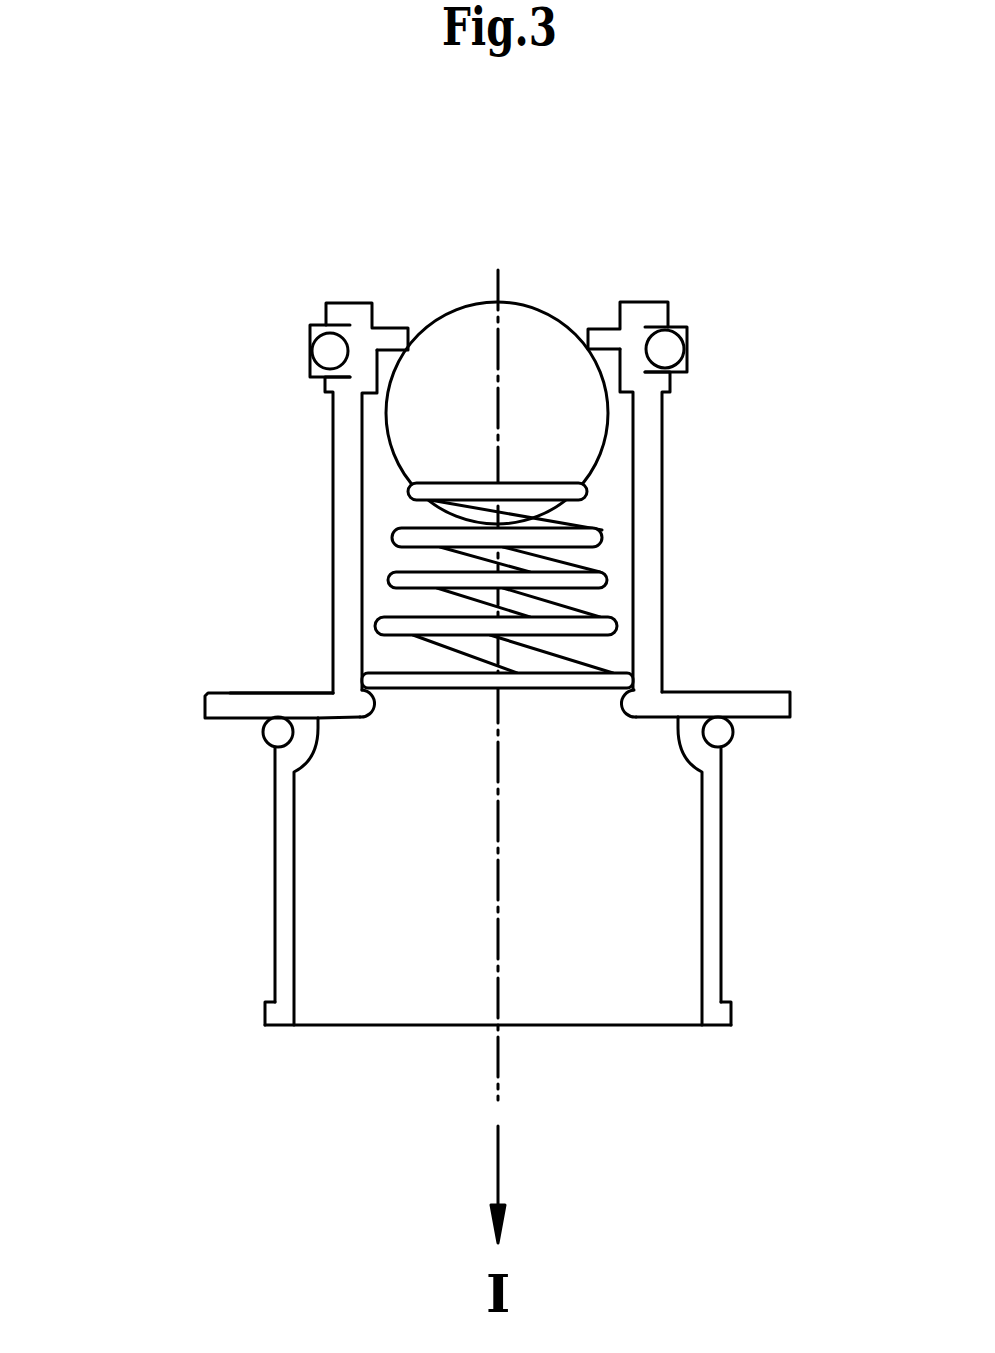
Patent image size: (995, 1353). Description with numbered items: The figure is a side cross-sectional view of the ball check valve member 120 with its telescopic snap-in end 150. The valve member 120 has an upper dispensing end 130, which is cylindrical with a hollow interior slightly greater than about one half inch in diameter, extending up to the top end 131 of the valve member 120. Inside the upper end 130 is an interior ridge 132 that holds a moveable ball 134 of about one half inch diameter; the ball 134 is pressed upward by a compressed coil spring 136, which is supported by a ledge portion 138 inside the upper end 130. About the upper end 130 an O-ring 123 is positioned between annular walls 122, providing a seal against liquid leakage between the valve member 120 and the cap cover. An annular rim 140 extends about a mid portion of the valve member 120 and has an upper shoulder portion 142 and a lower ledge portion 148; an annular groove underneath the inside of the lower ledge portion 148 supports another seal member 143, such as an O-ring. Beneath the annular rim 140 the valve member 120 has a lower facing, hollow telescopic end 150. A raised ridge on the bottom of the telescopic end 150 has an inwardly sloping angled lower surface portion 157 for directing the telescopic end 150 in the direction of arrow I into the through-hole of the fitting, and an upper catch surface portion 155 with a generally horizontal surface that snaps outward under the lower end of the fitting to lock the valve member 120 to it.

The ball check valve member 120 is at (121, 568).
The annular walls 122 is at (316, 368).
The O-ring 123 is at (740, 326).
The upper dispensing end 130 is at (402, 264).
The top end 131 is at (497, 445).
The interior ridge 132 is at (616, 285).
The moveable ball 134 is at (610, 413).
The compressed coil spring 136 is at (598, 585).
The ledge portion 138 is at (503, 757).
The annular rim 140 is at (425, 689).
The upper shoulder portion 142 is at (248, 659).
The seal member 143 is at (811, 758).
The lower ledge portion 148 is at (189, 749).
The telescopic end 150 is at (418, 871).
The upper catch surface portion 155 is at (514, 951).
The inwardly sloping angled lower surface portion 157 is at (437, 1055).